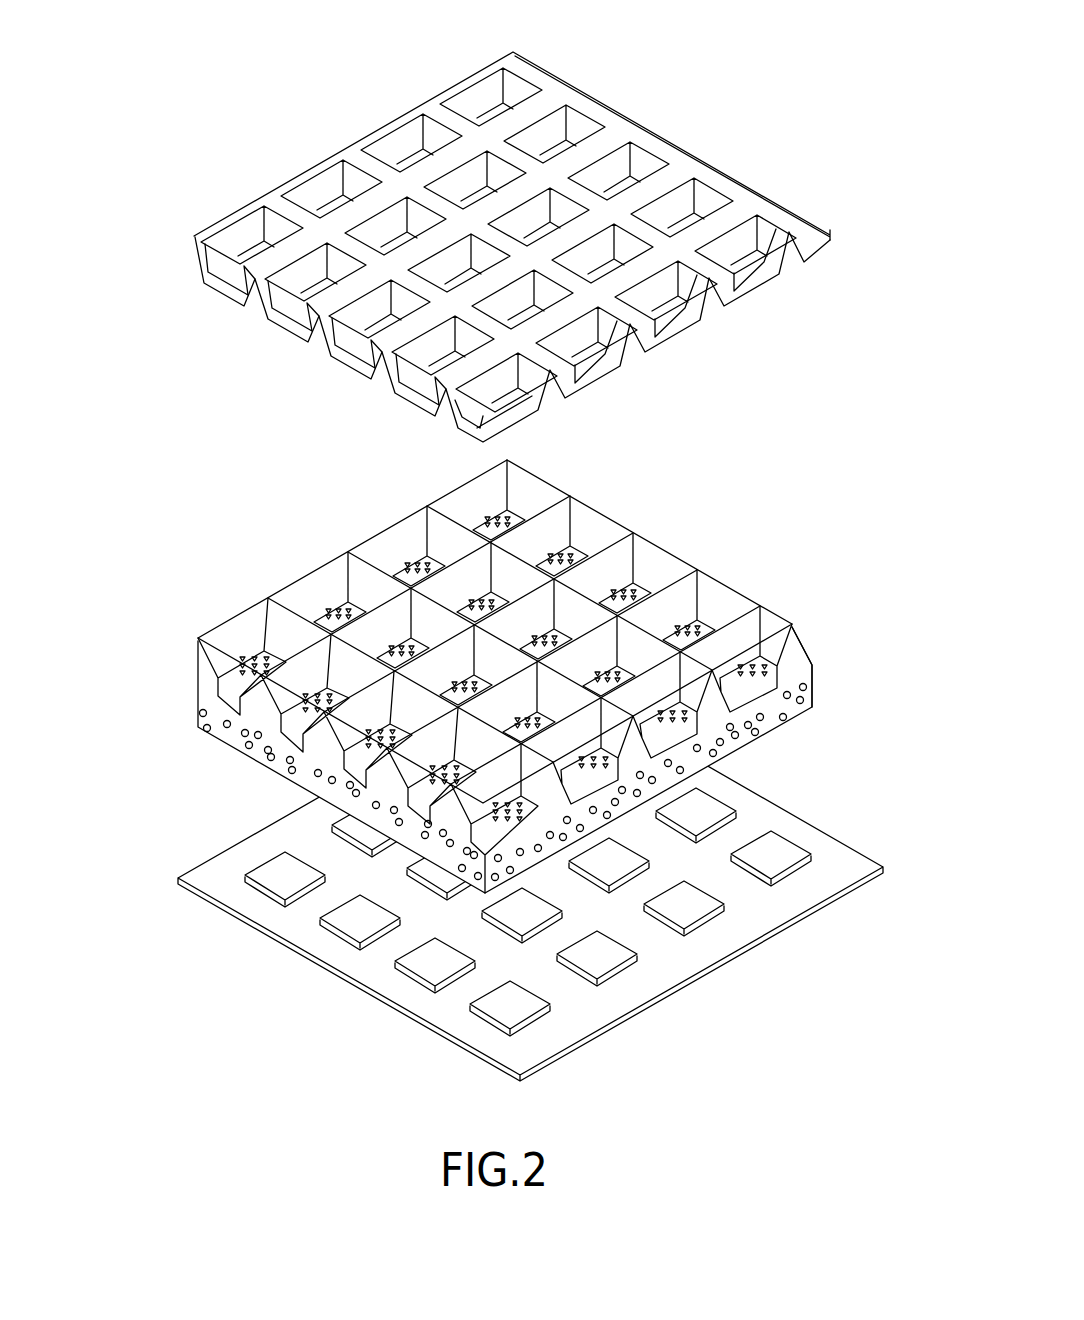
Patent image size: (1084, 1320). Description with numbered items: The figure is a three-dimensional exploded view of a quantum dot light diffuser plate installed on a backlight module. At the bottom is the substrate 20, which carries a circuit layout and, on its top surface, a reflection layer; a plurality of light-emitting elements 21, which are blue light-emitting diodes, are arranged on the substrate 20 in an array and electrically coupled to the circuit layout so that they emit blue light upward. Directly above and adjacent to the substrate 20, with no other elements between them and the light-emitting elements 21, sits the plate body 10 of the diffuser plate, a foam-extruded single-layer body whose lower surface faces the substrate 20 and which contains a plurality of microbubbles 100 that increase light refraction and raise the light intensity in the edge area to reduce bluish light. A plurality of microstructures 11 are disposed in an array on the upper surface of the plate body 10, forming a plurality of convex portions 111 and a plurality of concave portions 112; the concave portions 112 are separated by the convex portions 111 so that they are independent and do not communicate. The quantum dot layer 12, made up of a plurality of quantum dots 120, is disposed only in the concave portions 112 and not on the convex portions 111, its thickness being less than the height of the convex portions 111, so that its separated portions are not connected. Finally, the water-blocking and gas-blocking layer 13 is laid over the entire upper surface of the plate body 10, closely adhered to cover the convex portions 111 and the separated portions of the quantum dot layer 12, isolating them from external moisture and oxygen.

The water-blocking and gas-blocking layer 13 is at (226, 226).
The plate body 10 is at (501, 676).
The microstructures 11 is at (200, 648).
The convex portions 111 is at (508, 568).
The concave portions 112 is at (768, 703).
The quantum dot layer 12 is at (483, 520).
The quantum dots 120 is at (408, 563).
The microbubbles 100 is at (200, 737).
The substrate 20 is at (501, 875).
The light-emitting elements 21 is at (285, 875).